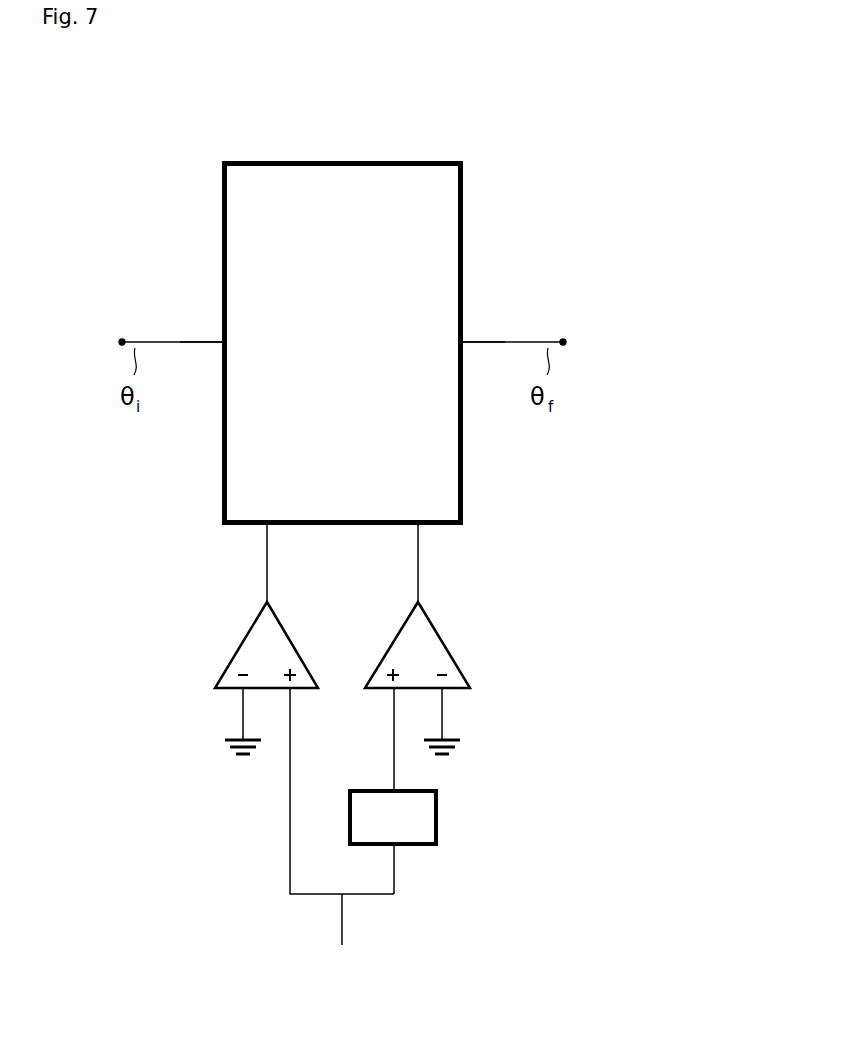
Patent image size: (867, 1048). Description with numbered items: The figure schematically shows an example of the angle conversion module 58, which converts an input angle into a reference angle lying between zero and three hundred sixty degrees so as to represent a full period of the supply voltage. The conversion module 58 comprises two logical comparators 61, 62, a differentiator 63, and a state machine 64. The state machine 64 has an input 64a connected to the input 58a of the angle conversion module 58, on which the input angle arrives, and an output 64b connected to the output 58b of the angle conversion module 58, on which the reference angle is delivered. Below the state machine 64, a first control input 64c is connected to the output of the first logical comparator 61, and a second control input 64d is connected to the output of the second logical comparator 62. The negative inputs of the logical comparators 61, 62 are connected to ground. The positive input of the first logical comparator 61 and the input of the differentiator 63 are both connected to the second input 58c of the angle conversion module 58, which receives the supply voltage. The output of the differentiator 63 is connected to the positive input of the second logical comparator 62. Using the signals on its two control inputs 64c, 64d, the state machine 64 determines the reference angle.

The conversion module 58 is at (490, 134).
The input 58a is at (122, 338).
The output 58b is at (563, 338).
The second input 58c is at (342, 945).
The first logical comparator 61 is at (237, 644).
The second logical comparator 62 is at (448, 642).
The differentiator 63 is at (393, 791).
The state machine 64 is at (343, 343).
The input 64a is at (222, 340).
The output 64b is at (463, 340).
The first control input 64c is at (263, 528).
The second control input 64d is at (422, 528).